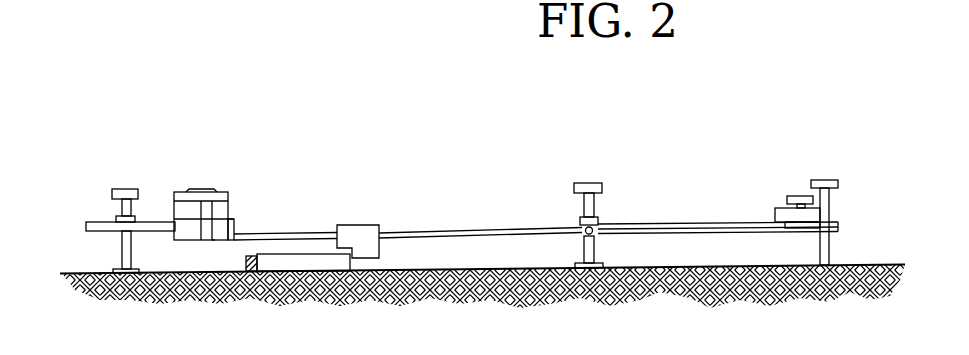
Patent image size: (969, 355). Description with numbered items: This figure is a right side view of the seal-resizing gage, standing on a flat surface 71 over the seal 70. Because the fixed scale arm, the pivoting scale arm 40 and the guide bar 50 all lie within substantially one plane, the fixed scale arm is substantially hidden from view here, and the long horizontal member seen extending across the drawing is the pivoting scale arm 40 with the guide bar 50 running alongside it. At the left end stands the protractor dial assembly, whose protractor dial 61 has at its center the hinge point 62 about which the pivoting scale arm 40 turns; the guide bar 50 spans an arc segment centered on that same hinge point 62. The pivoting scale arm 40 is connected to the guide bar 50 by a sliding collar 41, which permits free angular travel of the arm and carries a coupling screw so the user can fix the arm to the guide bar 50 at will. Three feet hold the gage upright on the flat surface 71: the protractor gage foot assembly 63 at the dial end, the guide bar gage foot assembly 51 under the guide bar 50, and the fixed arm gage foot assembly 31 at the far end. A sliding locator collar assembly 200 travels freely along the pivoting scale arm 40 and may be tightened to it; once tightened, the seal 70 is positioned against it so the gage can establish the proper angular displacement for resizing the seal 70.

The fixed arm gage foot assembly 31 is at (820, 180).
The pivoting scale arm 40 is at (545, 228).
The collar 41 is at (798, 197).
The guide bar 50 is at (718, 223).
The guide bar gage foot assembly 51 is at (598, 183).
The protractor dial 61 is at (207, 190).
The hinge point 62 is at (215, 240).
The protractor gage foot assembly 63 is at (128, 188).
The seal 70 is at (310, 263).
The flat surface 71 is at (653, 292).
The sliding locator collar assembly 200 is at (378, 211).